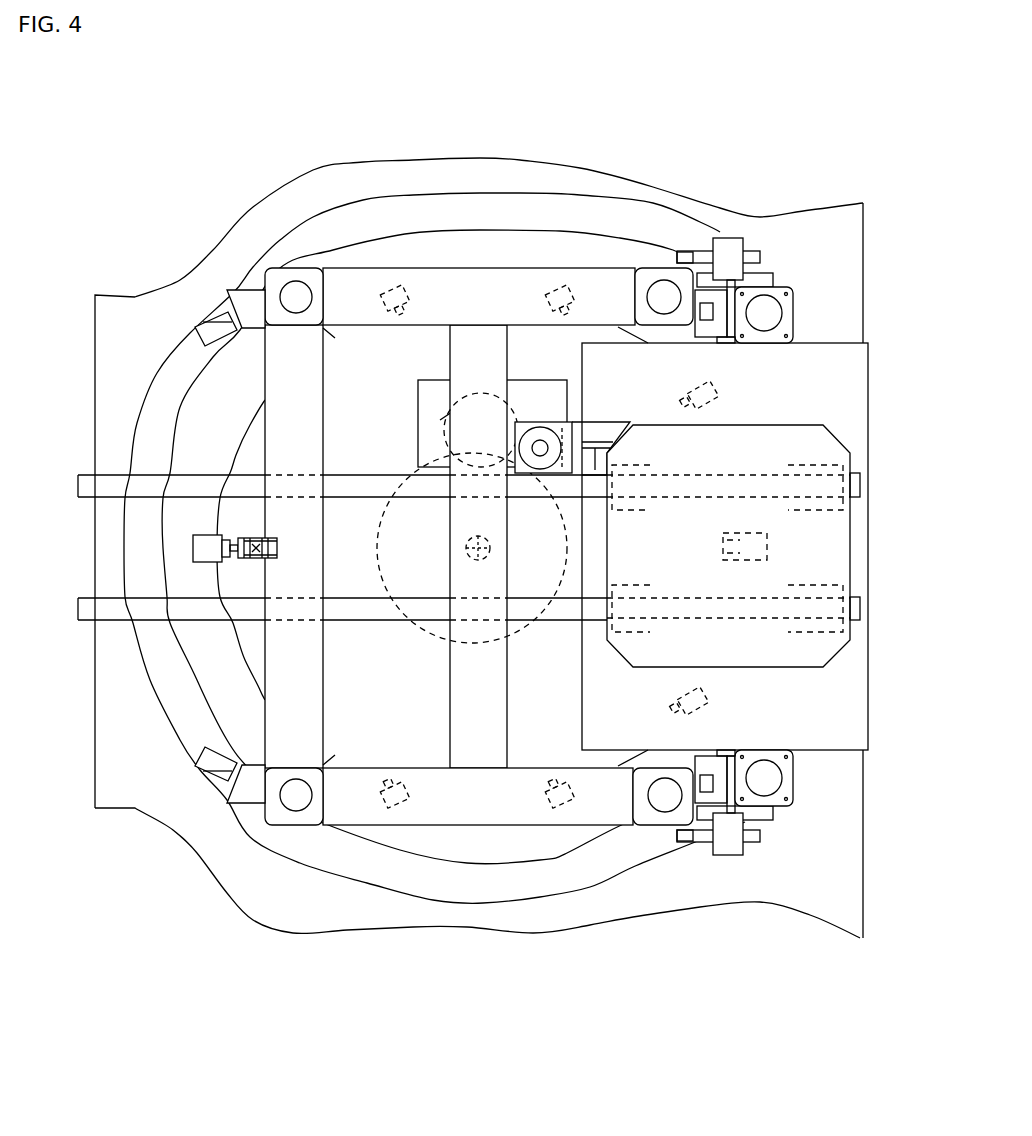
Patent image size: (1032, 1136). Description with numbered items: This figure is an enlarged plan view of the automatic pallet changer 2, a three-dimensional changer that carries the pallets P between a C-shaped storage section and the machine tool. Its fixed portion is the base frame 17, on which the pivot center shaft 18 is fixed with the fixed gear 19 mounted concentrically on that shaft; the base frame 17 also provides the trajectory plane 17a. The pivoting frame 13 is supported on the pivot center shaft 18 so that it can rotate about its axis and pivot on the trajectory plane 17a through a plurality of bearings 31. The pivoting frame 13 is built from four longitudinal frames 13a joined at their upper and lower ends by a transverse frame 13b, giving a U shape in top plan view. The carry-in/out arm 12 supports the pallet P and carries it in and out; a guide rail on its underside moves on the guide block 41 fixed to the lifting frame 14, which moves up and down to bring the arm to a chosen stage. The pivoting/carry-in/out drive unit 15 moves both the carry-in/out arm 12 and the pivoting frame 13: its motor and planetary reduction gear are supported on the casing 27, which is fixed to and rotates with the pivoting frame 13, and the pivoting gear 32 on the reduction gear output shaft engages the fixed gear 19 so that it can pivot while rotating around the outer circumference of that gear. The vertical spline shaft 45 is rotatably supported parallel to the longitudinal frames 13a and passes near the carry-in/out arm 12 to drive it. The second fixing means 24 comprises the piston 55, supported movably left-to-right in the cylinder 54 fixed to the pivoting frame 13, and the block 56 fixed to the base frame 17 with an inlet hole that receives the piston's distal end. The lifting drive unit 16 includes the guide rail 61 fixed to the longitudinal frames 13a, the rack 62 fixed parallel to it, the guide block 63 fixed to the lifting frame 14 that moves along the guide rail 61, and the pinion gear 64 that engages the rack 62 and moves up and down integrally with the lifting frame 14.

The automatic pallet changer 2 is at (800, 135).
The carry-in/out arm 12 is at (83, 472).
The pivoting frame 13 is at (287, 673).
The longitudinal frame 13a is at (280, 820).
The transverse frame 13b is at (490, 803).
The lifting frame 14 is at (845, 393).
The pivoting/carry-in/out drive unit 15 is at (572, 393).
The lifting drive unit 16 is at (778, 266).
The base frame 17 is at (327, 920).
The trajectory plane 17a is at (427, 883).
The pivot center shaft 18 is at (435, 627).
The fixed gear 19 is at (377, 600).
The second fixing means 24 is at (200, 562).
The casing 27 is at (418, 398).
The bearing 31 is at (217, 765).
The pivoting gear 32 is at (450, 427).
The guide block 41 is at (852, 448).
The spline shaft 45 is at (548, 447).
The cylinder 54 is at (233, 598).
The piston 55 is at (277, 545).
The block 56 is at (200, 545).
The guide rail 61 is at (708, 305).
The rack 62 is at (692, 256).
The guide block 63 is at (721, 290).
The pinion gear 64 is at (747, 252).
The pallet P is at (832, 548).